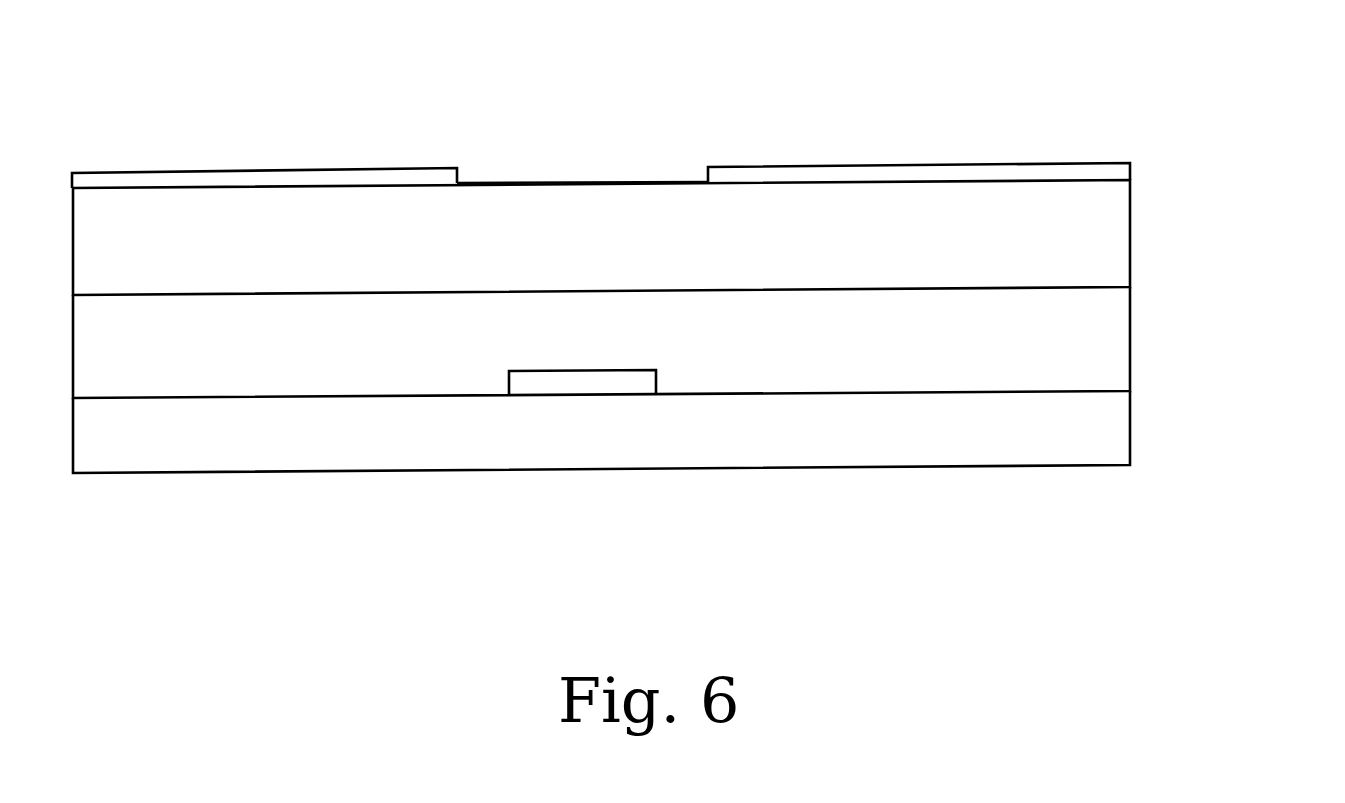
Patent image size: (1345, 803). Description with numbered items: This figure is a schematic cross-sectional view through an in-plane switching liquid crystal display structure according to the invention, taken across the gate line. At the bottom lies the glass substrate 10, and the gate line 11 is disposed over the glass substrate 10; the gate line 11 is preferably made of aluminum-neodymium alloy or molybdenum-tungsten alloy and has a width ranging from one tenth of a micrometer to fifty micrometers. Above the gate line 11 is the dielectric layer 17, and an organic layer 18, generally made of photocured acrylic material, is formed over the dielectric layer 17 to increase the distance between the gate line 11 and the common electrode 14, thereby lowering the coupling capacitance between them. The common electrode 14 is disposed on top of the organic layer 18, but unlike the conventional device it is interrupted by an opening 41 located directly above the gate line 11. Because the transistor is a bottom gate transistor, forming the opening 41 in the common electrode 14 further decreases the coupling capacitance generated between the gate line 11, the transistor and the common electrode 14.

The glass substrate 10 is at (1126, 445).
The gate line 11 is at (592, 385).
The common electrode 14 is at (1127, 172).
The dielectric layer 17 is at (1126, 361).
The organic layer 18 is at (1125, 255).
The opening 41 is at (672, 170).